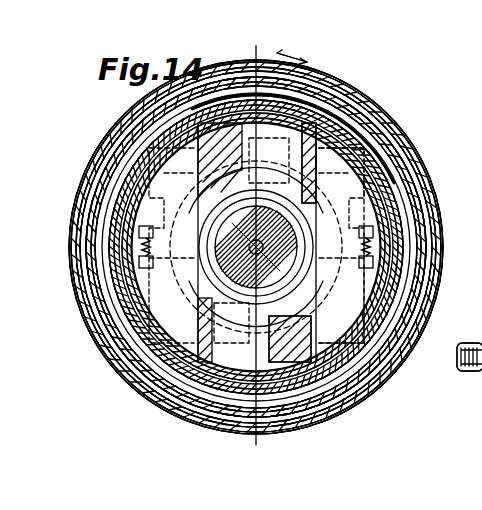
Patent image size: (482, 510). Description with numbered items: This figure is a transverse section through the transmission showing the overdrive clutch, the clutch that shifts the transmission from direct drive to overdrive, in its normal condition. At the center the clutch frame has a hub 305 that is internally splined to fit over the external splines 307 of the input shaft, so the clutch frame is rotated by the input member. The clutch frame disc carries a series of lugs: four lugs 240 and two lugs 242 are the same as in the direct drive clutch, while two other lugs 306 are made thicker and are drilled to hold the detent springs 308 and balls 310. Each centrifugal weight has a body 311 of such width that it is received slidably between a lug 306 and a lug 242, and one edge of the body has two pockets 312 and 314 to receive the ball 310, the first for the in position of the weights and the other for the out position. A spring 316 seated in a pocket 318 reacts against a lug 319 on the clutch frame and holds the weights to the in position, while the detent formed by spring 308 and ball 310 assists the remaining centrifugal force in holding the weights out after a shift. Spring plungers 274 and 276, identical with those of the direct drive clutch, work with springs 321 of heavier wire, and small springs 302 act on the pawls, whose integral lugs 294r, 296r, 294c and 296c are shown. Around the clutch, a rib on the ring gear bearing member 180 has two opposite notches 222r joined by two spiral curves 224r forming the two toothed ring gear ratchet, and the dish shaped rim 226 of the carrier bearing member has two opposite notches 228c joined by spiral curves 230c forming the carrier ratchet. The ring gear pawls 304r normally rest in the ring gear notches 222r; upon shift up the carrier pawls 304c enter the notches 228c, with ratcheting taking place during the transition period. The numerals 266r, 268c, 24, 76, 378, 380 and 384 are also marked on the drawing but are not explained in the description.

The ring gear pawl 304r is at (125, 117).
The ring gear notch 222r is at (130, 138).
The ring gear ratchet 224r is at (111, 196).
The carrier ratchet 230c is at (112, 216).
The small spring 302 is at (122, 256).
The spring 321 is at (130, 273).
The carrier notch 228c is at (155, 396).
The carrier pawl 304c is at (172, 412).
The lug 319 is at (229, 421).
The ring 268c is at (114, 154).
The pawl lug 294c is at (111, 168).
The pawl lug 296r is at (109, 181).
The spring plunger 276 is at (115, 231).
The spring plunger 274 is at (137, 281).
The lug 240 is at (121, 306).
The pawl lug 296c is at (118, 337).
The pawl lug 294r is at (127, 358).
The ring 266r is at (136, 376).
The lug 242 is at (218, 370).
The ball 310 is at (236, 433).
The lug 306 is at (268, 417).
The detent spring 308 is at (294, 404).
The dish shaped rim 226 is at (397, 229).
The ring gear bearing member 180 is at (435, 193).
The ring 76 is at (421, 175).
The ring 24 is at (404, 163).
The weight body 311 is at (383, 142).
The pocket 318 is at (342, 128).
The spring 316 is at (324, 111).
The pocket 314 is at (256, 71).
The pocket 312 is at (217, 81).
The external splines 307 is at (300, 207).
The hub 305 is at (293, 294).
The actuator 380 is at (400, 245).
The spring housing 378 is at (469, 345).
The spring 384 is at (473, 371).